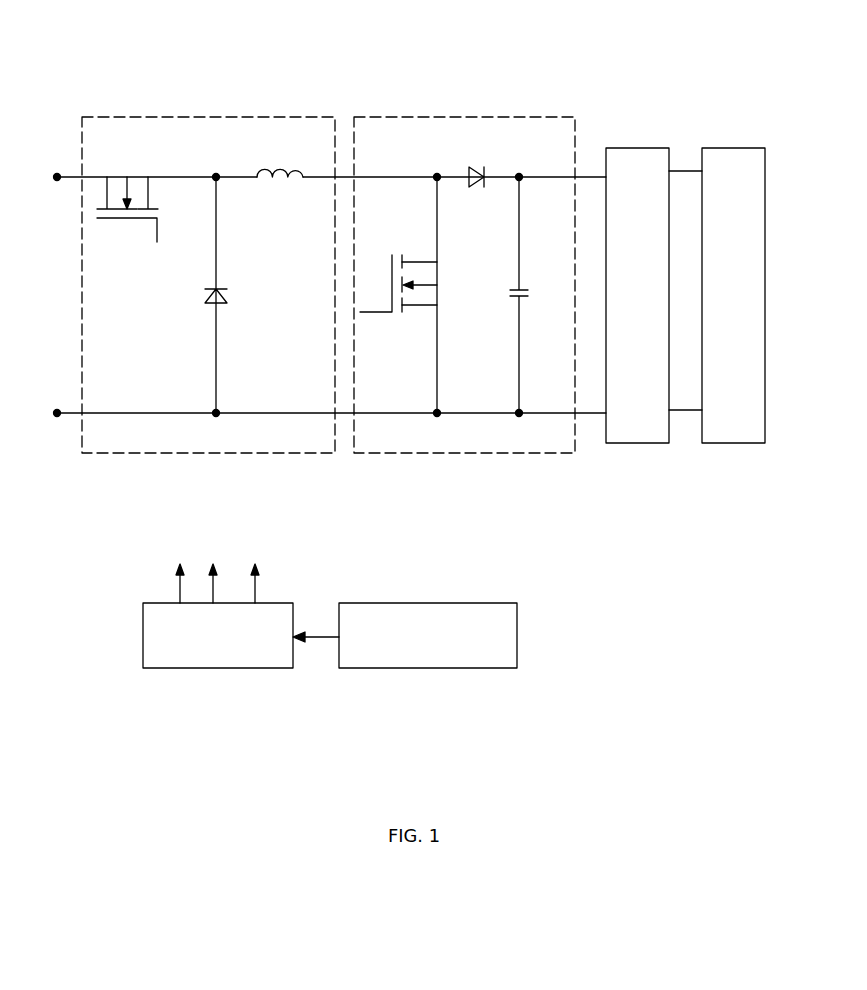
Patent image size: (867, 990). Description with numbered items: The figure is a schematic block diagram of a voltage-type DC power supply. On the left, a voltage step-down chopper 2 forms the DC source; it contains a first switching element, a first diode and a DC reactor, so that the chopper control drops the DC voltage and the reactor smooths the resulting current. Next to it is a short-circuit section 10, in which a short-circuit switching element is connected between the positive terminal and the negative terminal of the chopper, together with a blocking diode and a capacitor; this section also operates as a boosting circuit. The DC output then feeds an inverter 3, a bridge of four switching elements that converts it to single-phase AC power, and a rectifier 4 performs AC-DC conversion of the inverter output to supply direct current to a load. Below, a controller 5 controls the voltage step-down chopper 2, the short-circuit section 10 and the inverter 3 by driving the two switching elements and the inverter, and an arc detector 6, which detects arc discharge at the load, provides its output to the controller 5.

The voltage step-down chopper 2 is at (214, 116).
The short-circuit section 10 is at (429, 116).
The inverter 3 is at (629, 147).
The rectifier 4 is at (737, 147).
The controller 5 is at (152, 602).
The arc detector 6 is at (418, 602).